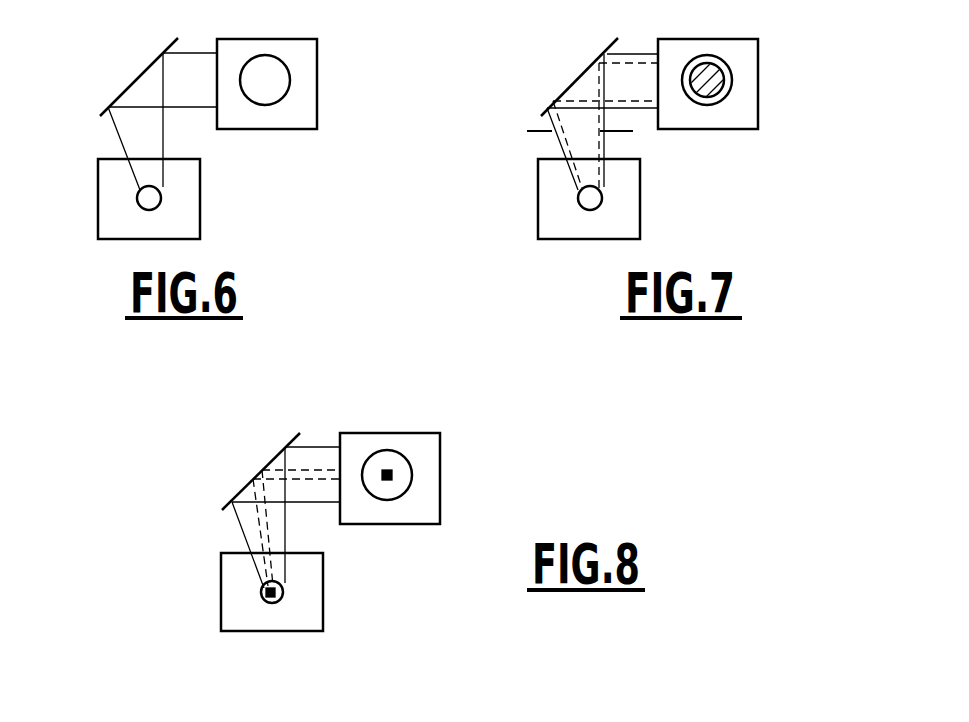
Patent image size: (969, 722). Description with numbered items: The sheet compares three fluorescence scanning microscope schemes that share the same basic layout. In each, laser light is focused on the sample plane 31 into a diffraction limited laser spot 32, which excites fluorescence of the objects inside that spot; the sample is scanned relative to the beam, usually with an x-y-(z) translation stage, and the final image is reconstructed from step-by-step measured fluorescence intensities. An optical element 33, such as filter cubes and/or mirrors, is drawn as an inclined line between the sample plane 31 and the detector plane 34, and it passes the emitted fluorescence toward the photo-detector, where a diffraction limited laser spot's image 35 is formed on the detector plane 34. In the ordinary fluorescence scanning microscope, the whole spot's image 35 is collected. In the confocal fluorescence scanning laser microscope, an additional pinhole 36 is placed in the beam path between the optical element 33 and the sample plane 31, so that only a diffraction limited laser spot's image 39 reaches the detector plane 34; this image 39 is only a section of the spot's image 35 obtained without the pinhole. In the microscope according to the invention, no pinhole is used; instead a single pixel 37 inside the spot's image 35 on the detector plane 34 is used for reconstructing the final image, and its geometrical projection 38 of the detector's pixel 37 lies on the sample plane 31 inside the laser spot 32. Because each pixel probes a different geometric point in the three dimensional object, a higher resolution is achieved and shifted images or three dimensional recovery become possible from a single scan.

In FIG. 6, the sample plane 31 is at (98, 217).
In FIG. 7, the sample plane 31 is at (538, 217).
In FIG. 8, the sample plane 31 is at (221, 612).
In FIG. 6, the diffraction limited laser spot 32 is at (160, 204).
In FIG. 7, the diffraction limited laser spot 32 is at (602, 205).
In FIG. 8, the diffraction limited laser spot 32 is at (283, 596).
In FIG. 6, the optical element 33 is at (128, 85).
In FIG. 7, the optical element 33 is at (569, 86).
In FIG. 8, the optical element 33 is at (241, 489).
In FIG. 6, the detector plane 34 is at (317, 58).
In FIG. 7, the detector plane 34 is at (758, 58).
In FIG. 6, the diffraction limited laser spot's image 35 is at (290, 90).
In FIG. 7, the diffraction limited laser spot's image 35 is at (732, 90).
In FIG. 8, the diffraction limited laser spot's image 35 is at (412, 480).
In FIG. 7, the pinhole 36 is at (527, 131).
In FIG. 8, the single pixel 37 is at (389, 481).
In FIG. 8, the geometrical projection of the detector's pixel 38 is at (268, 598).
In FIG. 7, the diffraction limited laser spot's image 39 is at (712, 97).